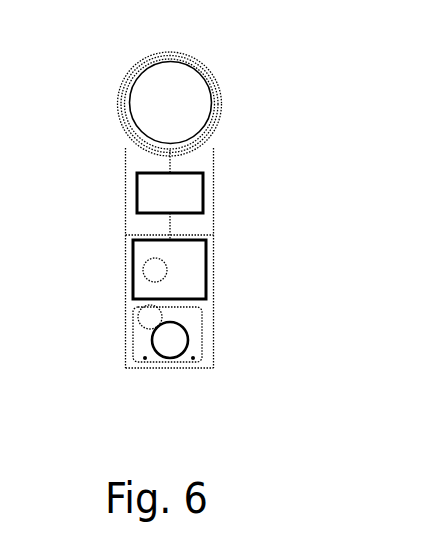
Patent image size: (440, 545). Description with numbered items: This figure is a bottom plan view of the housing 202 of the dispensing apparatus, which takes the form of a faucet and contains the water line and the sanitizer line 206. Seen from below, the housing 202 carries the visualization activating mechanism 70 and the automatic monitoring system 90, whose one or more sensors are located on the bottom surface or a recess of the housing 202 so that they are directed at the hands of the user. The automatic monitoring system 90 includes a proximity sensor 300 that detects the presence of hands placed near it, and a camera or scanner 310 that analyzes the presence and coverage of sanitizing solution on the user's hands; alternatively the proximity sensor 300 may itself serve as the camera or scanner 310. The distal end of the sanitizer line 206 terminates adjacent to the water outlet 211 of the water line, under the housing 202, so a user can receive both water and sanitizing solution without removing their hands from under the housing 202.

The housing 202 is at (268, 134).
The visualization activating mechanism 70 is at (203, 193).
The proximity sensor 300 is at (140, 190).
The camera or scanner 310 is at (155, 272).
The sanitizer line 206 is at (145, 318).
The automatic monitoring system 90 is at (130, 298).
The water outlet 211 is at (168, 342).